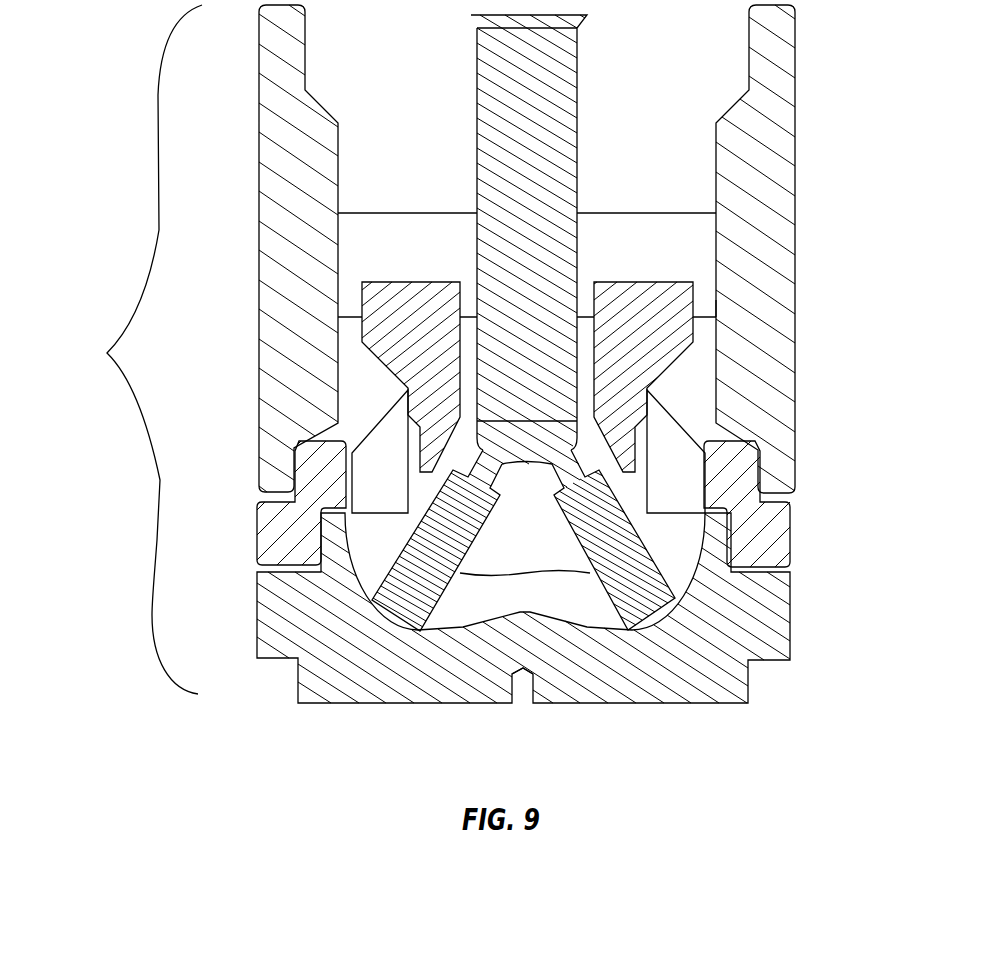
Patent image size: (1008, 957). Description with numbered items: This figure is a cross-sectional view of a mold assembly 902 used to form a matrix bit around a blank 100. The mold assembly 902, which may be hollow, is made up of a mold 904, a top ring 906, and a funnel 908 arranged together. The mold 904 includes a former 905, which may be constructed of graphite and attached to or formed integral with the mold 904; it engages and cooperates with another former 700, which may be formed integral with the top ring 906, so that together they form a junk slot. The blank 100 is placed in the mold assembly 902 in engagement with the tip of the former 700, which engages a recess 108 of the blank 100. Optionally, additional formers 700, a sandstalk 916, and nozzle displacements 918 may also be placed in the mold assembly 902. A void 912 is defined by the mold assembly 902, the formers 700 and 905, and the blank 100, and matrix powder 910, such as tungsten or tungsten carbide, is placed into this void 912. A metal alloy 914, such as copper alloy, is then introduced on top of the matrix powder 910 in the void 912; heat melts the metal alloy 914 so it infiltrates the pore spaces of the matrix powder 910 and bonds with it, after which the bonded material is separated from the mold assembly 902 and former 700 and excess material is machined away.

The blank 100 is at (716, 305).
The recess 108 is at (670, 363).
The former 700 is at (675, 477).
The mold assembly 902 is at (126, 349).
The mold 904 is at (302, 663).
The former 905 is at (583, 602).
The top ring 906 is at (760, 540).
The funnel 908 is at (760, 210).
The matrix powder 910 is at (350, 398).
The void 912 is at (492, 565).
The metal alloy 914 is at (397, 223).
The sandstalk 916 is at (490, 93).
The nozzle displacement 918 is at (585, 522).